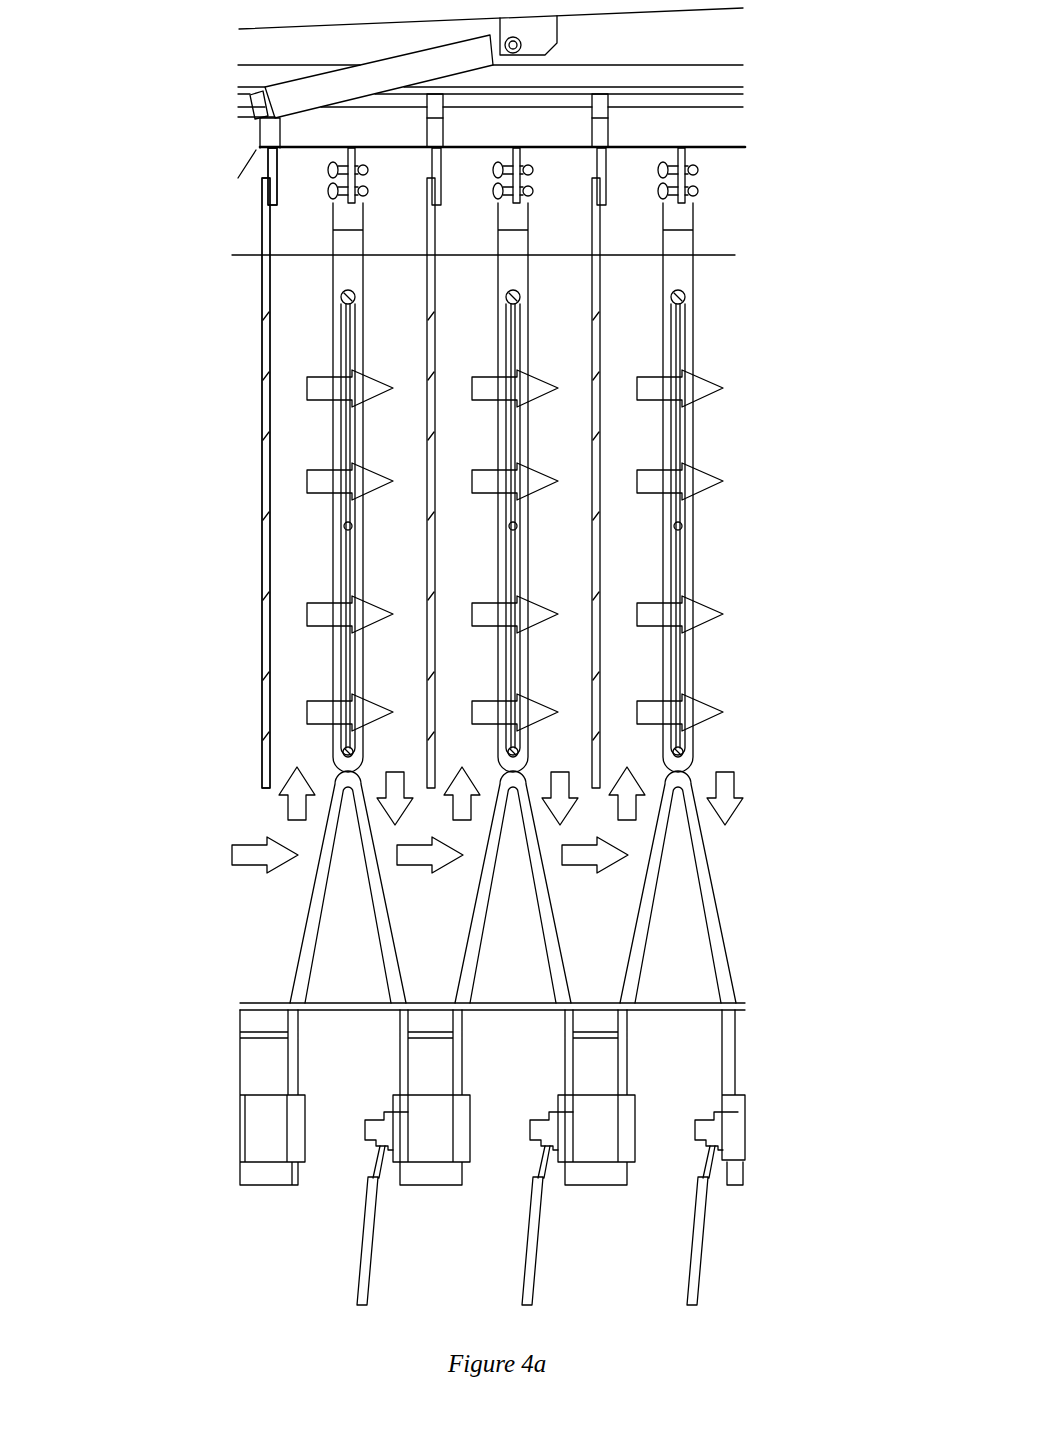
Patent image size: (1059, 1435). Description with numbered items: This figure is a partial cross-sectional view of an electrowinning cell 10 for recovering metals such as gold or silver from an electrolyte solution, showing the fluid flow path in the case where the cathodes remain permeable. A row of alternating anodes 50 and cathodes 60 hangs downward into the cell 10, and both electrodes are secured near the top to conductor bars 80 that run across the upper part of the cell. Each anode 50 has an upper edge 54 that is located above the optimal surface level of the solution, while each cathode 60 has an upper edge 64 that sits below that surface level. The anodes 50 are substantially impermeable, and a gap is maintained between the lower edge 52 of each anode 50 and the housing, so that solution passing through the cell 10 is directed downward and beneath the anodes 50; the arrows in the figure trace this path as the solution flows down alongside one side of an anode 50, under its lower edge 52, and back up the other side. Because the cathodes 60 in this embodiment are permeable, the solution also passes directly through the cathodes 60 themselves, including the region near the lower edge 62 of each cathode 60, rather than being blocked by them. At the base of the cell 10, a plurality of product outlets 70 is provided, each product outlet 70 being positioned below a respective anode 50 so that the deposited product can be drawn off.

The electrowinning cell 10 is at (160, 133).
The anode 50 is at (592, 345).
The lower edge of the anode 52 is at (682, 781).
The upper edge of the anode 54 is at (257, 225).
The cathode 60 is at (355, 503).
The lower edge of the cathode 62 is at (674, 751).
The upper edge of the cathode 64 is at (354, 298).
The product outlet 70 is at (432, 1063).
The conductor bar 80 is at (680, 160).